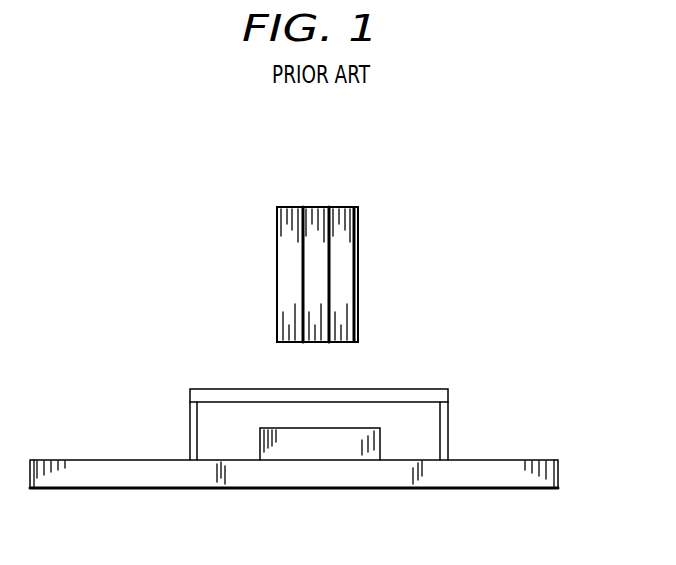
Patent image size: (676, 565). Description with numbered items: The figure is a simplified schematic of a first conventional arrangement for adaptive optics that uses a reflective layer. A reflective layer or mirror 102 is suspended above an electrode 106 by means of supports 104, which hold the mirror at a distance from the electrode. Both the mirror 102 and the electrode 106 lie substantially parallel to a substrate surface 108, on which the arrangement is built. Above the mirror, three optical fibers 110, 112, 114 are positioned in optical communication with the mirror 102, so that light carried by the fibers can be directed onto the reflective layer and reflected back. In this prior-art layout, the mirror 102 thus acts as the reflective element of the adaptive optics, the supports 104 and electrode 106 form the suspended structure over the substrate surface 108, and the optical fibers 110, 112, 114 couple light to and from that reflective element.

The reflective layer or mirror 102 is at (446, 390).
The supports 104 is at (190, 407).
The electrode 106 is at (260, 437).
The substrate surface 108 is at (545, 459).
The optical fiber 110 is at (277, 229).
The optical fiber 112 is at (358, 217).
The optical fiber 114 is at (318, 207).